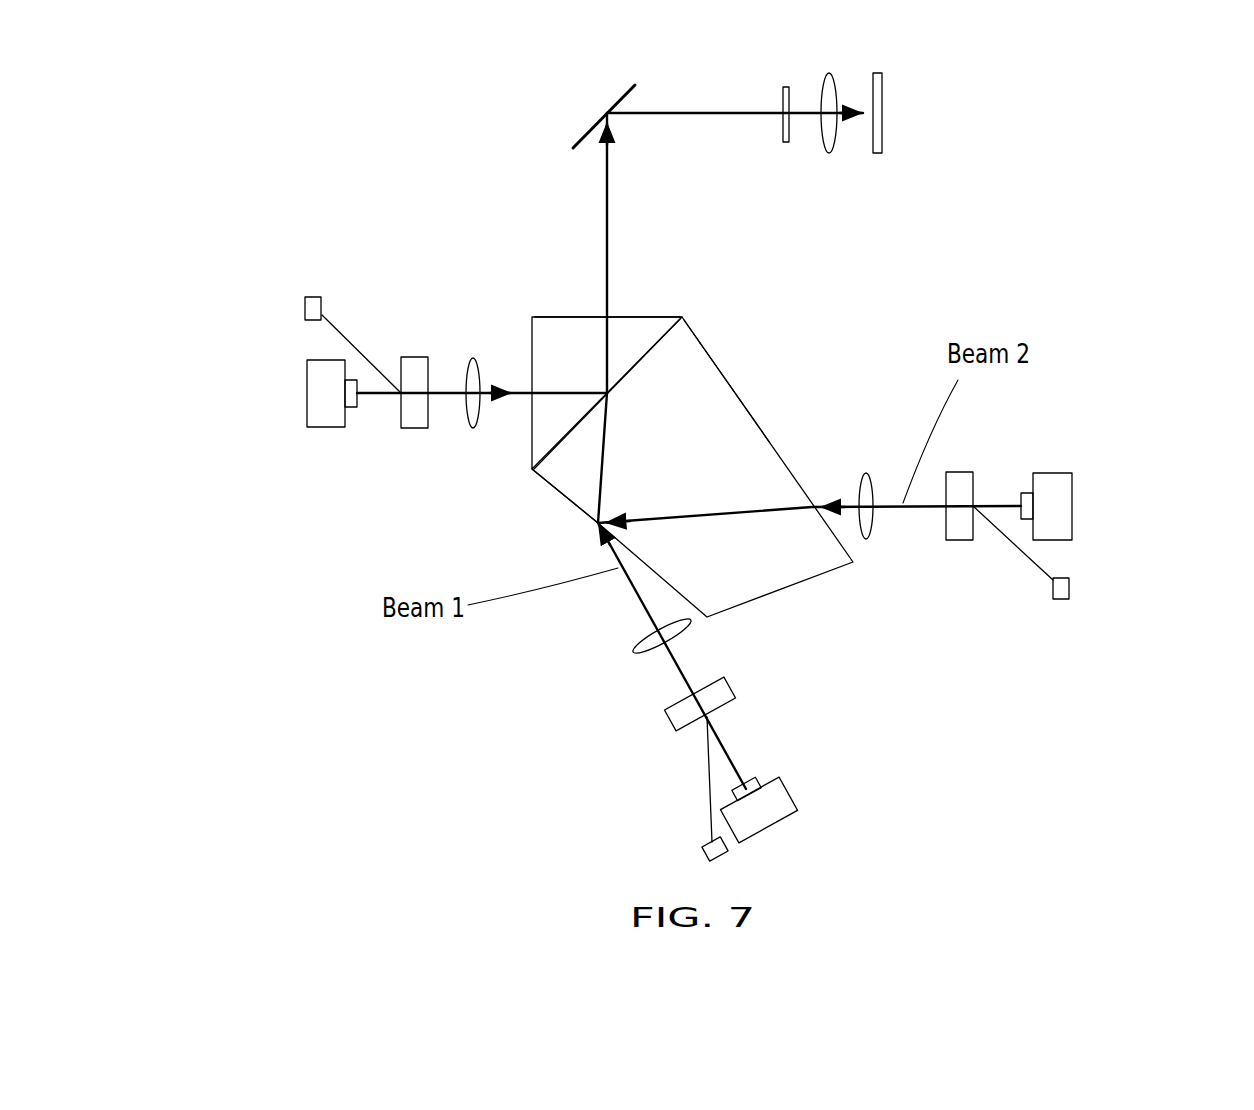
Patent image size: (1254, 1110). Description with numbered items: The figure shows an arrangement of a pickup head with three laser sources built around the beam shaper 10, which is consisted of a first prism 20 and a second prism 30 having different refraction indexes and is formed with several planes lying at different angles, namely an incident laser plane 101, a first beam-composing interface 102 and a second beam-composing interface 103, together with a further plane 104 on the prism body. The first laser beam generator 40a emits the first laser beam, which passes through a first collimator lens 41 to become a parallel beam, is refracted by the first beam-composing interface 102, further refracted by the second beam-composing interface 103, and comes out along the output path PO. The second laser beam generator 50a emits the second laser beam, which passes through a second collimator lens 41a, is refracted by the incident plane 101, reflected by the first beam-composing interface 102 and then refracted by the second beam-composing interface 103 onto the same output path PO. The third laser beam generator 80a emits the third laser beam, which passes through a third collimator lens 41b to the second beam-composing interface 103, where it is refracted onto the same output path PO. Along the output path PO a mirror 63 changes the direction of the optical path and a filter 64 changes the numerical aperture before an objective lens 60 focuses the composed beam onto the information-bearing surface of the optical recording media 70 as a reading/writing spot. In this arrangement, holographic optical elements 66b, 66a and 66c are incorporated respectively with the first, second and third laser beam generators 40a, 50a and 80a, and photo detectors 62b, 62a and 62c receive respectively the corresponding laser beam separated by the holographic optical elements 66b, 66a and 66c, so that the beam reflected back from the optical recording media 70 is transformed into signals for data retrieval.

The beam shaper 10 is at (508, 438).
The first prism 20 is at (737, 457).
The second prism 30 is at (624, 340).
The first laser beam generator 40a is at (777, 793).
The first collimator lens 41 is at (633, 650).
The second collimator lens 41a is at (867, 528).
The third collimator lens 41b is at (472, 377).
The second laser beam generator 50a is at (1068, 482).
The objective lens 60 is at (830, 107).
The photo detector 62a is at (1062, 600).
The photo detector 62b is at (700, 847).
The photo detector 62c is at (309, 297).
The mirror 63 is at (583, 133).
The filter 64 is at (780, 106).
The holographic optical element 66a is at (962, 482).
The holographic optical element 66b is at (725, 693).
The holographic optical element 66c is at (405, 425).
The optical recording media 70 is at (885, 135).
The third laser beam generator 80a is at (313, 395).
The incident laser plane 101 is at (740, 396).
The first beam-composing interface 102 is at (553, 487).
The second beam-composing interface 103 is at (657, 343).
The prism surface 104 is at (567, 317).
The output path PO is at (610, 165).